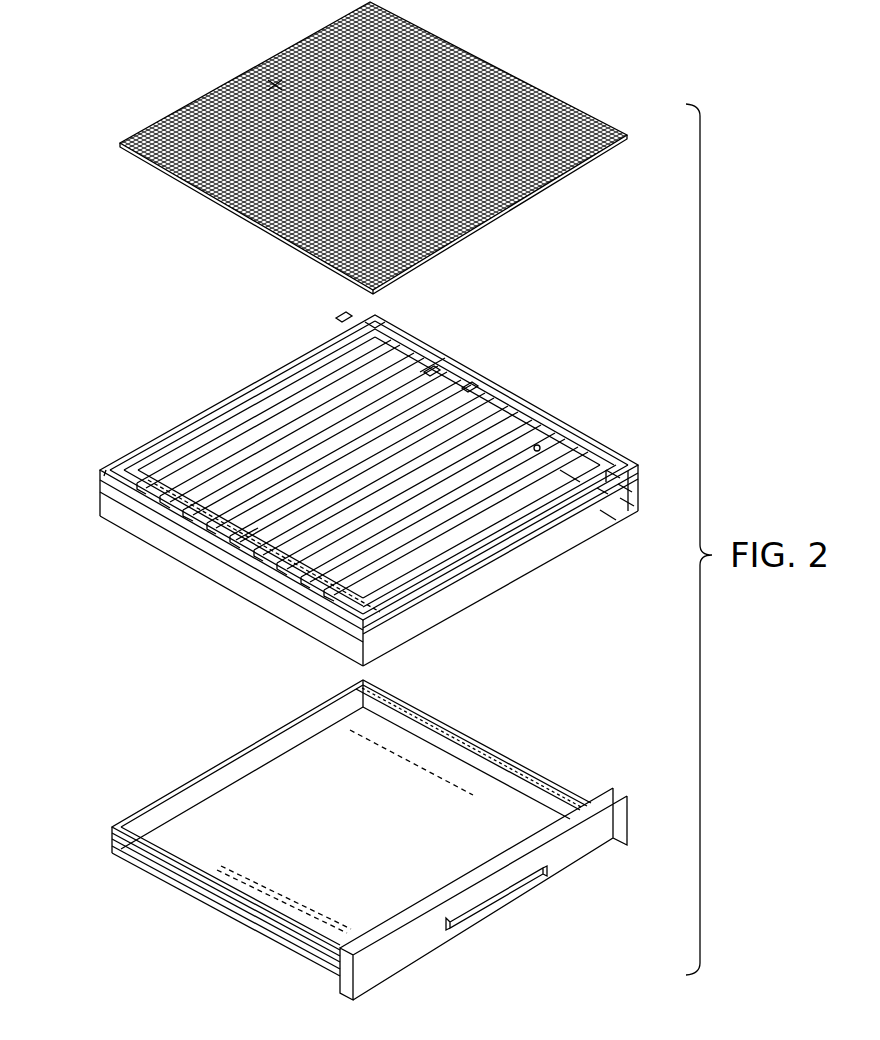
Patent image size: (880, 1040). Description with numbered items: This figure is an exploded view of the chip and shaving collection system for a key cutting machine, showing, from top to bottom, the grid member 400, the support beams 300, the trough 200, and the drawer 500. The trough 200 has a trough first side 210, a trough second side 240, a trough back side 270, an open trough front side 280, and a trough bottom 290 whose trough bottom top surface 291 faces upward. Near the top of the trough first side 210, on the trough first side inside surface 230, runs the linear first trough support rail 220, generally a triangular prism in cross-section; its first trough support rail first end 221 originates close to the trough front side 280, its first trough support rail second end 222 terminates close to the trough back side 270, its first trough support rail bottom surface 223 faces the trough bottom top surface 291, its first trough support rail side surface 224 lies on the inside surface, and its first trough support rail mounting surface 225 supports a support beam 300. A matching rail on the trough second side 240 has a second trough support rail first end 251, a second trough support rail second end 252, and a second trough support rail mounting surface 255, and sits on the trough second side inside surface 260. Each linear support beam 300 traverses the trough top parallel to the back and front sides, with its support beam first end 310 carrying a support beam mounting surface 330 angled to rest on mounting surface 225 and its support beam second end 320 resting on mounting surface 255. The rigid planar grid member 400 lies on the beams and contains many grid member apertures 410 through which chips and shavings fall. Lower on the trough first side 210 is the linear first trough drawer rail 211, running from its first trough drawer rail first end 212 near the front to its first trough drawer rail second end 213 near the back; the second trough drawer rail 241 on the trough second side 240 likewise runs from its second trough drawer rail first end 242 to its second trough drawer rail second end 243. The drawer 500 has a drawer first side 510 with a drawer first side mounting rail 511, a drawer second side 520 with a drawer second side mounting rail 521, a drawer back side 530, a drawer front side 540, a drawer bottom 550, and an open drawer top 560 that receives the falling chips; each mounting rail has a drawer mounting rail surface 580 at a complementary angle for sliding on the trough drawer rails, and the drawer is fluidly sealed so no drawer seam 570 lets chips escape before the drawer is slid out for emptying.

The trough 200 is at (205, 390).
The trough first side 210 is at (557, 410).
The first trough drawer rail 211 is at (605, 520).
The first trough drawer rail first end 212 is at (597, 490).
The first trough drawer rail second end 213 is at (345, 348).
The first trough support rail 220 is at (430, 372).
The first trough support rail first end 221 is at (625, 487).
The first trough support rail second end 222 is at (338, 313).
The first trough support rail bottom surface 223 is at (537, 452).
The first trough support rail side surface 224 is at (628, 497).
The first trough support rail mounting surface 225 is at (613, 477).
The trough first side inside surface 230 is at (468, 385).
The trough second side 240 is at (140, 522).
The second trough drawer rail 241 is at (355, 660).
The second trough drawer rail first end 242 is at (393, 657).
The second trough drawer rail second end 243 is at (118, 505).
The second trough support rail first end 251 is at (365, 615).
The second trough support rail second end 252 is at (118, 492).
The second trough support rail mounting surface 255 is at (362, 622).
The trough second side inside surface 260 is at (372, 633).
The trough back side 270 is at (175, 428).
The trough front side 280 is at (558, 552).
The trough bottom 290 is at (345, 525).
The trough bottom top surface 291 is at (293, 630).
The support beam 300 is at (537, 443).
The support beam first end 310 is at (432, 378).
The support beam second end 320 is at (240, 545).
The support beam mounting surface 330 is at (567, 477).
The grid member 400 is at (545, 97).
The grid member apertures 410 is at (275, 85).
The drawer 500 is at (125, 880).
The drawer first side 510 is at (520, 770).
The drawer first side mounting rail 511 is at (553, 790).
The drawer second side 520 is at (200, 890).
The drawer second side mounting rail 521 is at (250, 913).
The drawer back side 530 is at (213, 768).
The drawer front side 540 is at (410, 942).
The drawer bottom 550 is at (390, 837).
The open drawer top 560 is at (297, 925).
The drawer seam 570 is at (540, 810).
The drawer mounting rail surface 580 is at (215, 905).